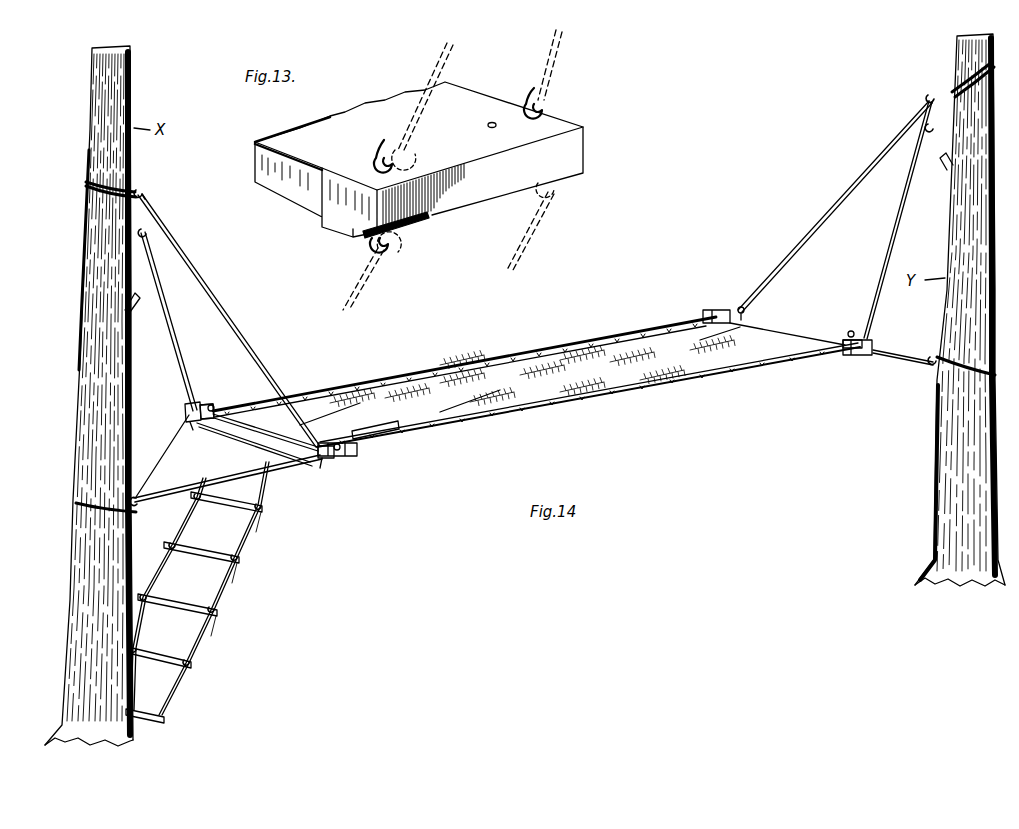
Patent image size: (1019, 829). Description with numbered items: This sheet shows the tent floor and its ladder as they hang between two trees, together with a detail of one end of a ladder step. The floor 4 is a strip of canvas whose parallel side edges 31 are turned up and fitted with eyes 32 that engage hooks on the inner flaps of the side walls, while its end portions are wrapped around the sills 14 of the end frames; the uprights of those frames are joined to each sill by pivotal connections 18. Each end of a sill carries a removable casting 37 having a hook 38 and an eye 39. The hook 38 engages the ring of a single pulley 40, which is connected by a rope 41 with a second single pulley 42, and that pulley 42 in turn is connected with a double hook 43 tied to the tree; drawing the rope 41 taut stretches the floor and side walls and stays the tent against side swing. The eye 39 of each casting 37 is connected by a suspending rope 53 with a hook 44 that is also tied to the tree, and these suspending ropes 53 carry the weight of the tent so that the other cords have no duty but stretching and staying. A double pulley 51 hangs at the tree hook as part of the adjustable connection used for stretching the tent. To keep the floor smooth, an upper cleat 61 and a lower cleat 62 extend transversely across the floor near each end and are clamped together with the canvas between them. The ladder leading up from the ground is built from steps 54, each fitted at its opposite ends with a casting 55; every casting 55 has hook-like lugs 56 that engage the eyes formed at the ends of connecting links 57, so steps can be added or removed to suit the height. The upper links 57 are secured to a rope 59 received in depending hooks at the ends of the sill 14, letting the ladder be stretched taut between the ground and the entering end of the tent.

In FIG. 14, the floor 4 is at (583, 382).
In FIG. 14, the sill 14 is at (350, 456).
In FIG. 14, the pivotal connection 18 is at (212, 406).
In FIG. 14, the side edge 31 is at (405, 370).
In FIG. 14, the eye 32 is at (513, 355).
In FIG. 14, the casting 37 is at (206, 404).
In FIG. 14, the hook 38 is at (192, 427).
In FIG. 14, the eye 39 is at (186, 409).
In FIG. 14, the single pulley 40 is at (290, 441).
In FIG. 14, the rope 41 is at (160, 474).
In FIG. 14, the single pulley 42 is at (180, 476).
In FIG. 14, the double hook 43 is at (932, 357).
In FIG. 14, the hook 44 is at (146, 195).
In FIG. 14, the double pulley 51 is at (150, 235).
In FIG. 14, the suspending rope 53 is at (187, 358).
In FIG. 14, the step 54 is at (192, 540).
In FIG. 13, the casting 55 is at (465, 183).
In FIG. 14, the casting 55 is at (262, 510).
In FIG. 13, the hook-like lug 56 is at (548, 107).
In FIG. 14, the hook-like lug 56 is at (252, 514).
In FIG. 13, the connecting link 57 is at (449, 62).
In FIG. 14, the connecting link 57 is at (262, 503).
In FIG. 14, the rope 59 is at (232, 434).
In FIG. 14, the upper cleat 61 is at (364, 419).
In FIG. 14, the lower cleat 62 is at (400, 434).